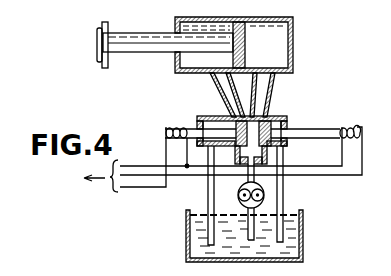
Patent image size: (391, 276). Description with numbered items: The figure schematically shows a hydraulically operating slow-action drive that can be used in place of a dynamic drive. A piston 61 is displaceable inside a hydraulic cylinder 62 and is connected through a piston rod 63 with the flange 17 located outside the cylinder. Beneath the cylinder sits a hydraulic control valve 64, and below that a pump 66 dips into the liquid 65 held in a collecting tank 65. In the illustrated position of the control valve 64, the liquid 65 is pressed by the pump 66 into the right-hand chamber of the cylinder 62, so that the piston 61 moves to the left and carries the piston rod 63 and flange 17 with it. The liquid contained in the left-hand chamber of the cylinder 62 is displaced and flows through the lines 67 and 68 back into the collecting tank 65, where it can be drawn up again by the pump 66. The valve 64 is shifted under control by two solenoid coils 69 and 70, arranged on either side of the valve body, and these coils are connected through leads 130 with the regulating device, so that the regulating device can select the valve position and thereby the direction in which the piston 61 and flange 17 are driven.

The flange 17 is at (99, 61).
The piston 61 is at (251, 45).
The hydraulic cylinder 62 is at (284, 58).
The piston rod 63 is at (158, 41).
The hydraulic control valve 64 is at (268, 151).
The liquid / collecting tank 65 is at (291, 235).
The pump 66 is at (264, 195).
The line 67 is at (218, 85).
The line 68 is at (207, 203).
The solenoid coil 69 is at (342, 122).
The solenoid coil 70 is at (172, 125).
The leads 130 is at (104, 180).